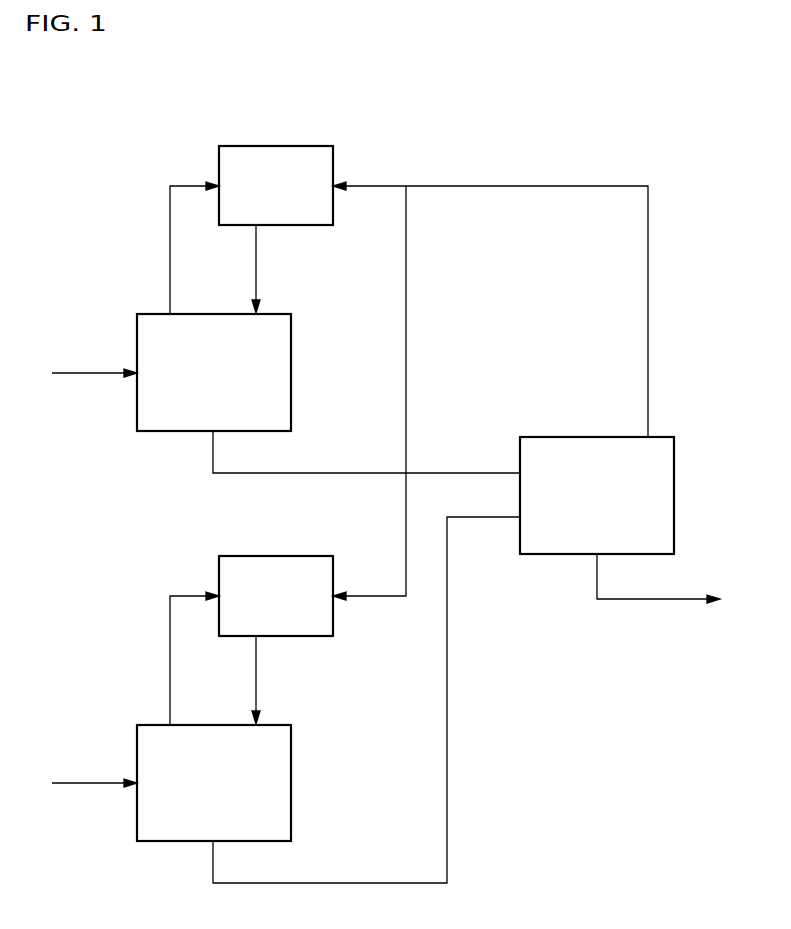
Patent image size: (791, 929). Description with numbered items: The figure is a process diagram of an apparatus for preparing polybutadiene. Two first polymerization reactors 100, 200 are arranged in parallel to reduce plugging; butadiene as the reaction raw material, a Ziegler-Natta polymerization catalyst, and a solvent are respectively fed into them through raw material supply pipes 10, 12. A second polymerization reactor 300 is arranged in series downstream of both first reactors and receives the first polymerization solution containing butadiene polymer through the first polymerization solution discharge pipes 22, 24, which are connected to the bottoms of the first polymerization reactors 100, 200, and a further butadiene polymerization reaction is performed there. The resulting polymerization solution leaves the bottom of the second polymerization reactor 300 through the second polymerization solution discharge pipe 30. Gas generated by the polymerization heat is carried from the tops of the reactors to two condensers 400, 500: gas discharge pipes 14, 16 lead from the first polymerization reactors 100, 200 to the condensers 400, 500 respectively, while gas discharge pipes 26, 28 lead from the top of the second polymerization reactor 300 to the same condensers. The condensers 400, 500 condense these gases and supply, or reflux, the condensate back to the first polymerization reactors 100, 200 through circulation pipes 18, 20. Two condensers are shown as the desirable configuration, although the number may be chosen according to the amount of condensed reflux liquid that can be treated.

The raw material supply pipe 10 is at (80, 373).
The raw material supply pipe 12 is at (80, 783).
The gas discharge pipe 14 is at (170, 206).
The gas discharge pipe 16 is at (170, 616).
The circulation pipe 18 is at (257, 268).
The circulation pipe 20 is at (257, 677).
The first polymerization solution discharge pipe 22 is at (213, 473).
The first polymerization solution discharge pipe 24 is at (213, 883).
The gas discharge pipe 26 is at (384, 186).
The gas discharge pipe 28 is at (407, 390).
The second polymerization solution discharge pipe 30 is at (651, 600).
The first polymerization reactor 100 is at (137, 415).
The first polymerization reactor 200 is at (137, 825).
The second polymerization reactor 300 is at (676, 495).
The condenser 400 is at (276, 146).
The condenser 500 is at (276, 556).